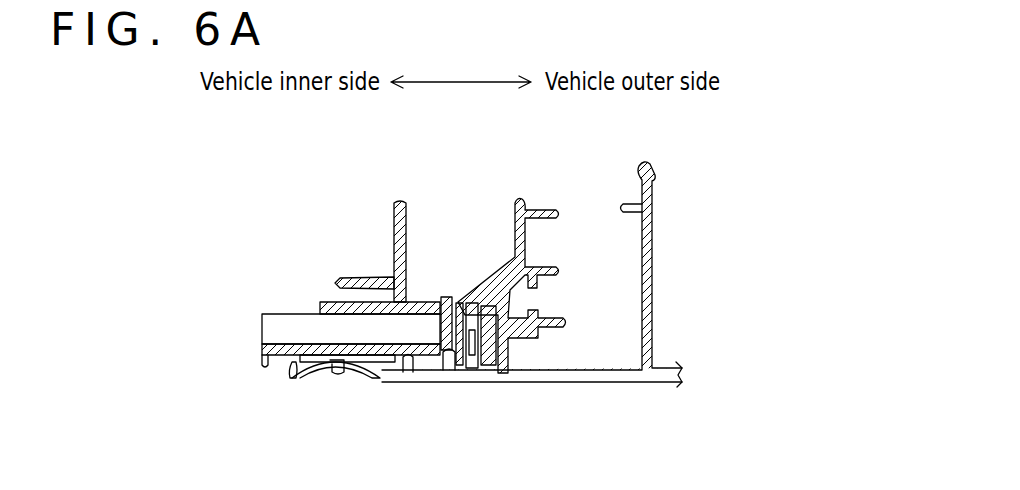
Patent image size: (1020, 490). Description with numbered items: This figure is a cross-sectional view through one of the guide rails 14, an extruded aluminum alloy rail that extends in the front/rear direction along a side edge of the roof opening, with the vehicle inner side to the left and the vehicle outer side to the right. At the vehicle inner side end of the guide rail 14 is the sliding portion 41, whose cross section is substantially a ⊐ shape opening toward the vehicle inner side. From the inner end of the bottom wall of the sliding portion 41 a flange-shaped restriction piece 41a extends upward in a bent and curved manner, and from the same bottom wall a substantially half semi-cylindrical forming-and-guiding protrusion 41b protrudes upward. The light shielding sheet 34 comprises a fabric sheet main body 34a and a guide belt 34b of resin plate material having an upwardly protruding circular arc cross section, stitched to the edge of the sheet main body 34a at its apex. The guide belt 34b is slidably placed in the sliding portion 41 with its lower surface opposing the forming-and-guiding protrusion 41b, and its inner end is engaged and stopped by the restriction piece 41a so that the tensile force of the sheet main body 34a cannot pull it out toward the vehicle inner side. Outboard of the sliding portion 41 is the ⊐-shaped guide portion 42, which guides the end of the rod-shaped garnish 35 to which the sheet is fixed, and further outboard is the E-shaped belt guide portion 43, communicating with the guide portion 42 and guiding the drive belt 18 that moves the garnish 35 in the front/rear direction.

The guide rail 14 is at (603, 379).
The drive belt 18 is at (464, 302).
The light shielding sheet 34 is at (266, 360).
The sheet main body 34a is at (299, 352).
The guide belt 34b is at (313, 383).
The garnish 35 is at (263, 312).
The sliding portion 41 is at (374, 379).
The restriction piece 41a is at (284, 372).
The forming-and-guiding protrusion 41b is at (342, 384).
The guide portion 42 is at (442, 297).
The belt guide portion 43 is at (477, 378).